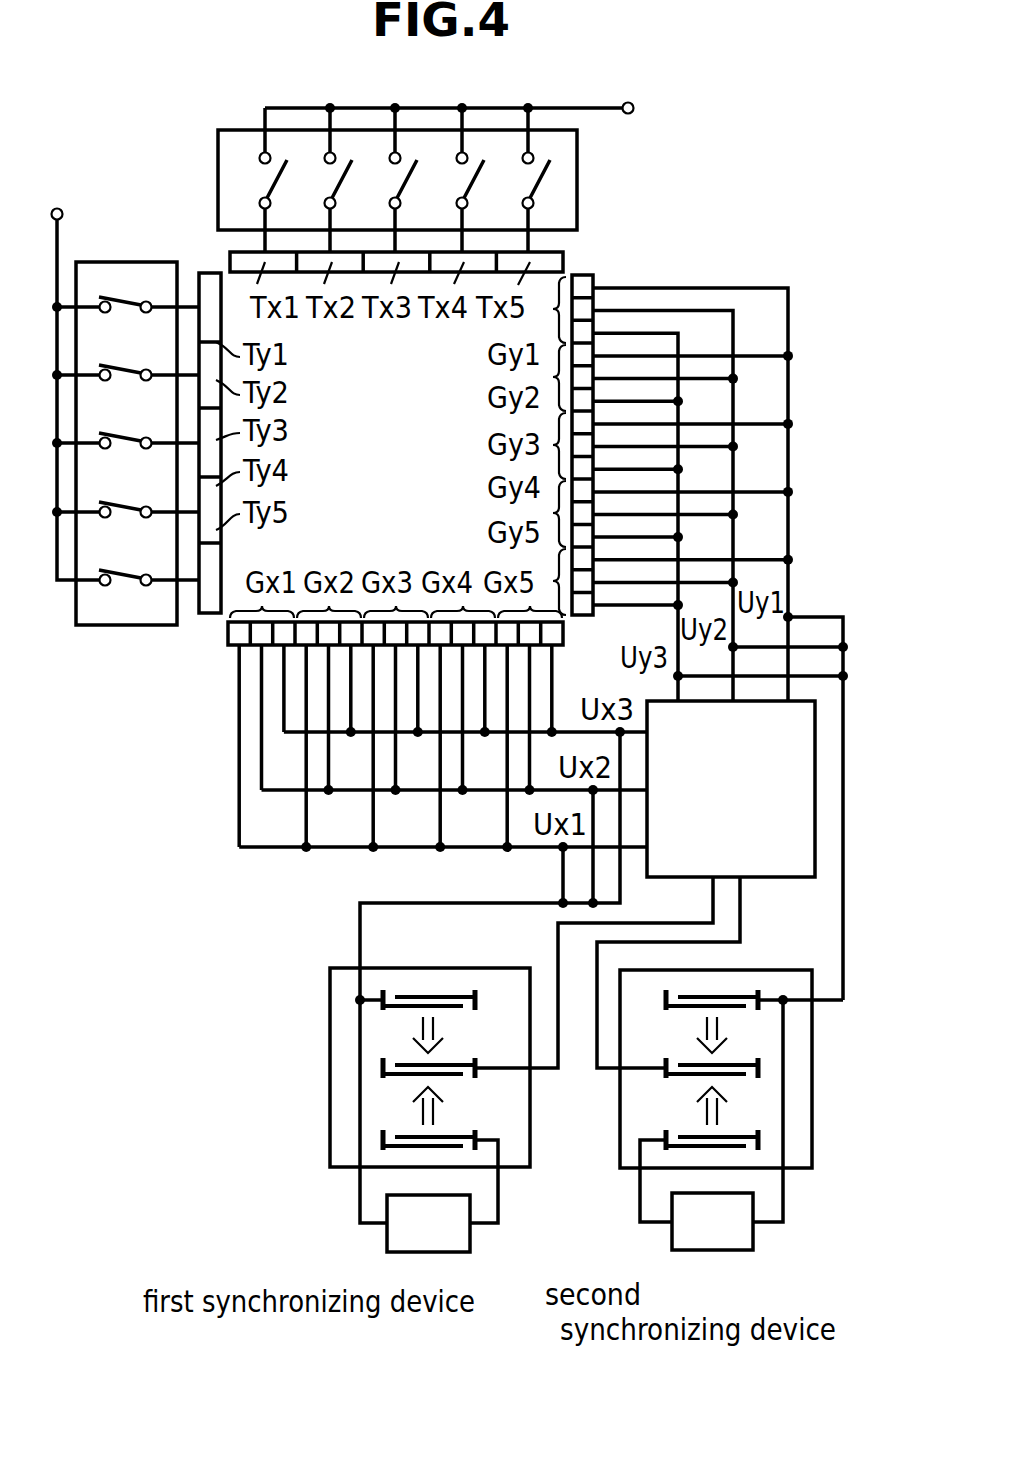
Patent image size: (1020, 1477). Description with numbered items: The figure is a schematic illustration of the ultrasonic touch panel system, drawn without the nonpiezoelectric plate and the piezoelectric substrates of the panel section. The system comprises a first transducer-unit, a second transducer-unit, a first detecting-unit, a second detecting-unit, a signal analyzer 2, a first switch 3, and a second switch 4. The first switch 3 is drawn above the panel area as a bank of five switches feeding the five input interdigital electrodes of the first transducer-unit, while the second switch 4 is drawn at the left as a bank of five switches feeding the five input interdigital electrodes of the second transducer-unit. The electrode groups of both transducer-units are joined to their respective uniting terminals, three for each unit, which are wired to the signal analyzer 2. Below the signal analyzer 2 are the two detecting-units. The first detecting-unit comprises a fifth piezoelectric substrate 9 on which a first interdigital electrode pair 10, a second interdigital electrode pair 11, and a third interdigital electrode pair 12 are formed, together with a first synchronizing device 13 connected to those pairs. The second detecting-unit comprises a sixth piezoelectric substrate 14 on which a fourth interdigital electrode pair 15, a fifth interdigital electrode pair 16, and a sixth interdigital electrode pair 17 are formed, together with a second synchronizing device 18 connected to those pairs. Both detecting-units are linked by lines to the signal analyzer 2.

The signal analyzer 2 is at (731, 789).
The first switch 3 is at (567, 202).
The second switch 4 is at (119, 618).
The fifth piezoelectric substrate 9 is at (345, 1020).
The first interdigital electrode pair 10 is at (454, 994).
The second interdigital electrode pair 11 is at (454, 1127).
The third interdigital electrode pair 12 is at (454, 1056).
The first synchronizing device 13 is at (440, 1287).
The sixth piezoelectric substrate 14 is at (781, 983).
The fourth interdigital electrode pair 15 is at (690, 998).
The fifth interdigital electrode pair 16 is at (690, 1133).
The sixth interdigital electrode pair 17 is at (690, 1061).
The second synchronizing device 18 is at (590, 1277).